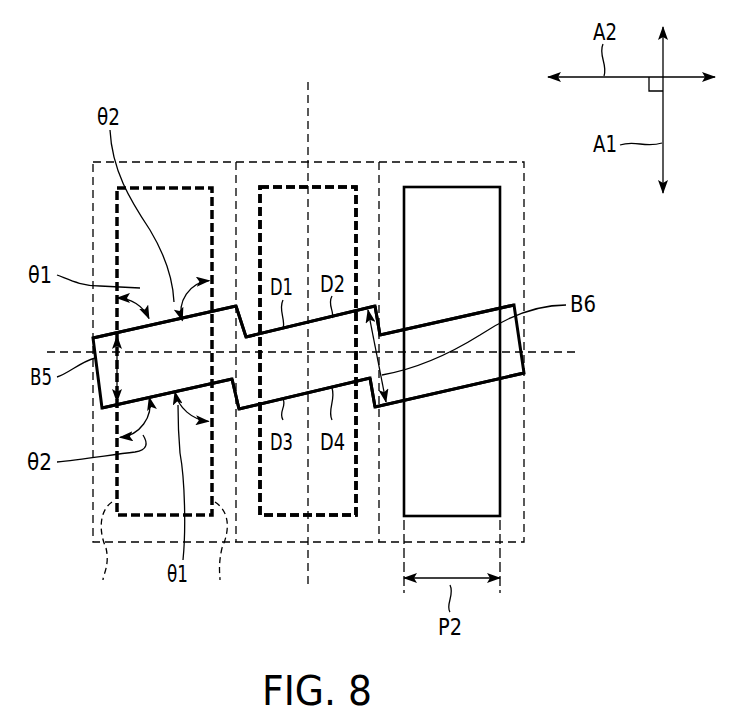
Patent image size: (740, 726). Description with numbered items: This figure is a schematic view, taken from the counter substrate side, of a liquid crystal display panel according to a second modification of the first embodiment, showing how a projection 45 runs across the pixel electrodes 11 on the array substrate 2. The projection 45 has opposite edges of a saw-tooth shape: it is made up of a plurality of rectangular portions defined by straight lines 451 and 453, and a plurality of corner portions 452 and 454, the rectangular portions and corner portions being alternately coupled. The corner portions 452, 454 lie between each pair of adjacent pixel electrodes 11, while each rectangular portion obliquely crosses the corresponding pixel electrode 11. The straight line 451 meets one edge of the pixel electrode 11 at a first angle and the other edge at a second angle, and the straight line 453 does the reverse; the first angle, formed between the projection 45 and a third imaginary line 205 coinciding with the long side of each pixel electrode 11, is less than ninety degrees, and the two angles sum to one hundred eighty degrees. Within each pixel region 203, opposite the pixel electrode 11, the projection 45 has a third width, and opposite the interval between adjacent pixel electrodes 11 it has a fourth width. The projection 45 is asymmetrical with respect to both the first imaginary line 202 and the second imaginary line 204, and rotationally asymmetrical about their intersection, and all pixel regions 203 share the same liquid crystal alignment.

The array substrate 2 is at (488, 173).
The pixel electrode 11 is at (278, 187).
The projection 45 is at (504, 338).
The first imaginary line 202 is at (565, 353).
The pixel region 203 is at (337, 184).
The second imaginary line 204 is at (306, 105).
The third imaginary line 205 is at (162, 555).
The straight line 451 is at (153, 319).
The corner portion 452 is at (238, 306).
The straight line 453 is at (163, 398).
The corner portion 454 is at (240, 410).